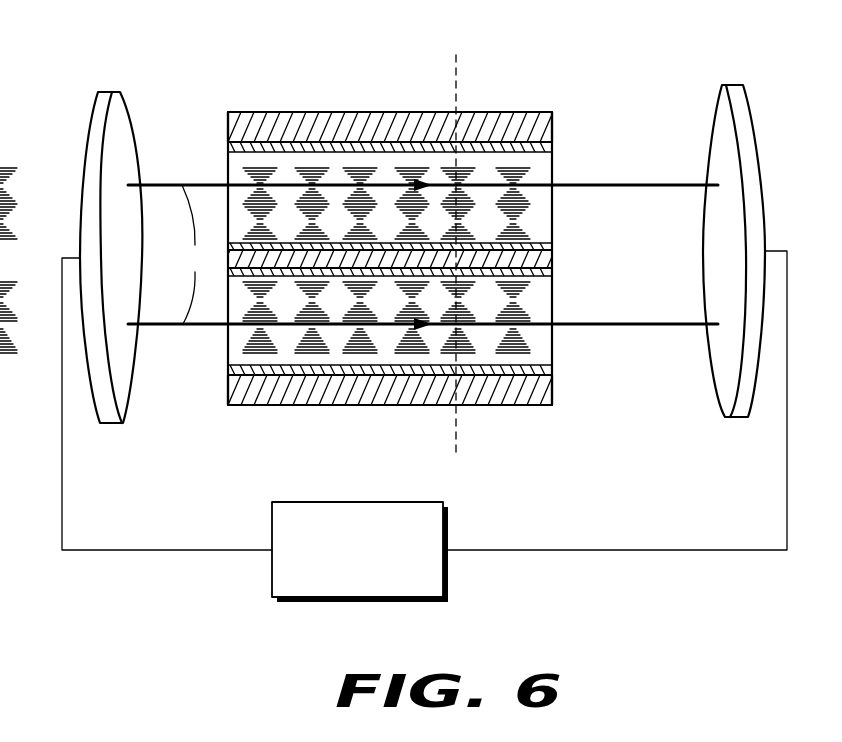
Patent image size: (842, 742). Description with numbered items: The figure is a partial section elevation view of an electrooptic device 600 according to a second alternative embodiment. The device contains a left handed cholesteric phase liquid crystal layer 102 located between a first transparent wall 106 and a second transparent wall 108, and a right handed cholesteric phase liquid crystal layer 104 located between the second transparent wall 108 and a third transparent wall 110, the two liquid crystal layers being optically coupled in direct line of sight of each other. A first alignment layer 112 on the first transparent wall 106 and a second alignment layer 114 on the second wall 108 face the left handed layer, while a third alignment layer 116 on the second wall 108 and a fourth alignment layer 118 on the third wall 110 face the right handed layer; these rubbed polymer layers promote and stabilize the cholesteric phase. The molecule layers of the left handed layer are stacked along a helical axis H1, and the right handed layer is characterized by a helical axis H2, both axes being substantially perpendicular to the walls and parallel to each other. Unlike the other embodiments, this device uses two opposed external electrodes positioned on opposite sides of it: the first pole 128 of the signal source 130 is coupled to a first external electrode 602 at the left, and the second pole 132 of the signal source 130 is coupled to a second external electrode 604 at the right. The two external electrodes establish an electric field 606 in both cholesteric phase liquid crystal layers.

The electrooptic device 600 is at (309, 78).
The first external electrode 602 is at (105, 92).
The second external electrode 604 is at (733, 85).
The electric field 606 is at (194, 254).
The left handed cholesteric phase liquid crystal layer 102 is at (542, 197).
The right handed cholesteric phase liquid crystal layer 104 is at (543, 308).
The first transparent wall 106 is at (552, 112).
The second transparent wall 108 is at (552, 258).
The third transparent wall 110 is at (552, 378).
The first alignment layer 112 is at (548, 147).
The second alignment layer 114 is at (548, 243).
The third alignment layer 116 is at (548, 280).
The fourth alignment layer 118 is at (548, 365).
The first pole 128 is at (271, 552).
The signal source 130 is at (337, 600).
The second pole 132 is at (448, 552).
The helical axis H1 is at (457, 78).
The helical axis H2 is at (460, 433).